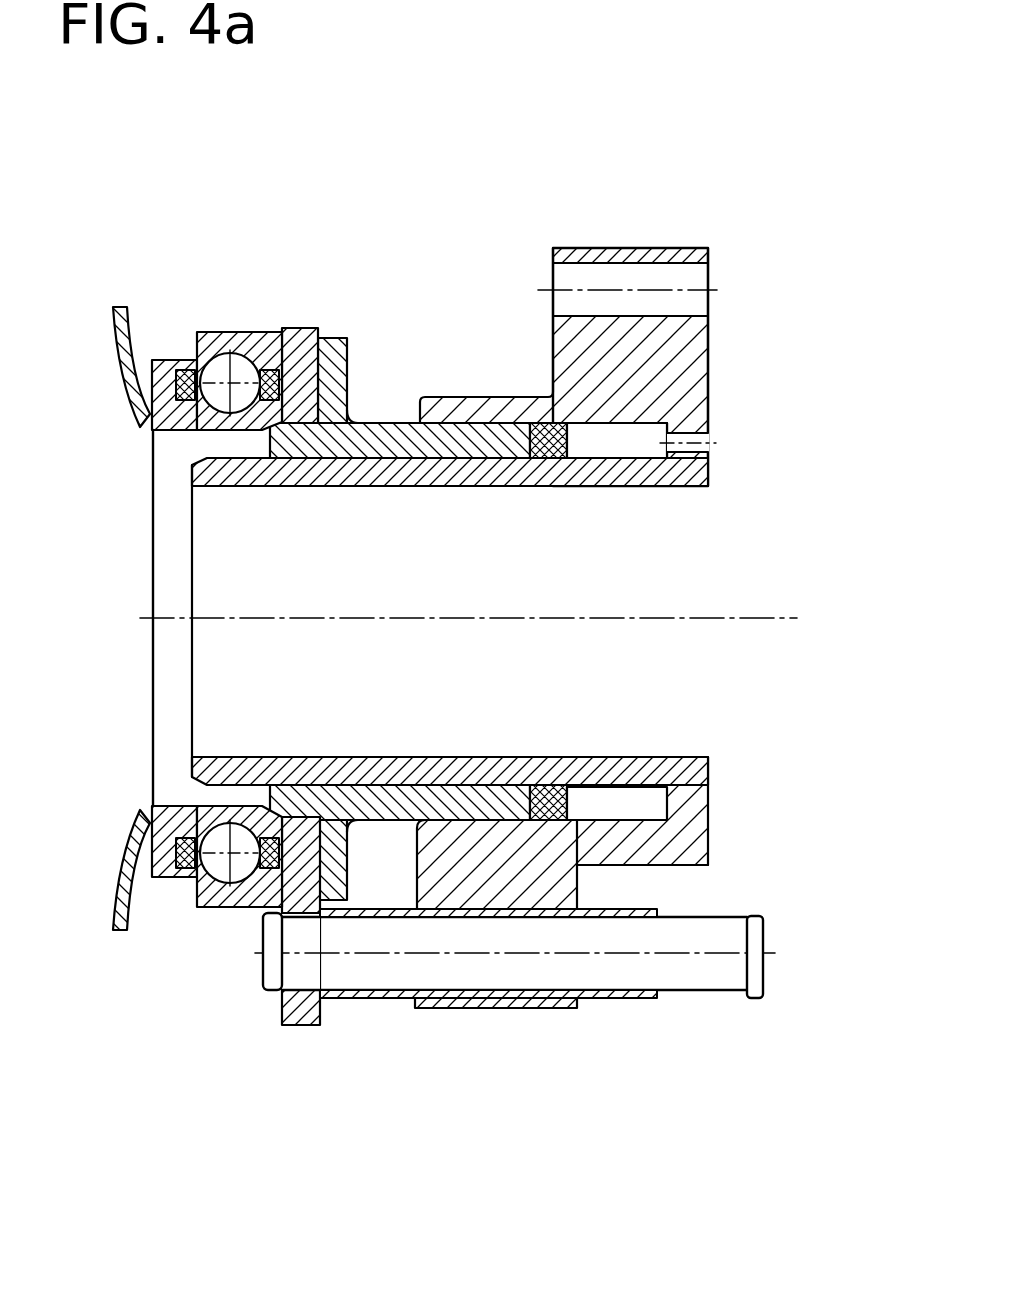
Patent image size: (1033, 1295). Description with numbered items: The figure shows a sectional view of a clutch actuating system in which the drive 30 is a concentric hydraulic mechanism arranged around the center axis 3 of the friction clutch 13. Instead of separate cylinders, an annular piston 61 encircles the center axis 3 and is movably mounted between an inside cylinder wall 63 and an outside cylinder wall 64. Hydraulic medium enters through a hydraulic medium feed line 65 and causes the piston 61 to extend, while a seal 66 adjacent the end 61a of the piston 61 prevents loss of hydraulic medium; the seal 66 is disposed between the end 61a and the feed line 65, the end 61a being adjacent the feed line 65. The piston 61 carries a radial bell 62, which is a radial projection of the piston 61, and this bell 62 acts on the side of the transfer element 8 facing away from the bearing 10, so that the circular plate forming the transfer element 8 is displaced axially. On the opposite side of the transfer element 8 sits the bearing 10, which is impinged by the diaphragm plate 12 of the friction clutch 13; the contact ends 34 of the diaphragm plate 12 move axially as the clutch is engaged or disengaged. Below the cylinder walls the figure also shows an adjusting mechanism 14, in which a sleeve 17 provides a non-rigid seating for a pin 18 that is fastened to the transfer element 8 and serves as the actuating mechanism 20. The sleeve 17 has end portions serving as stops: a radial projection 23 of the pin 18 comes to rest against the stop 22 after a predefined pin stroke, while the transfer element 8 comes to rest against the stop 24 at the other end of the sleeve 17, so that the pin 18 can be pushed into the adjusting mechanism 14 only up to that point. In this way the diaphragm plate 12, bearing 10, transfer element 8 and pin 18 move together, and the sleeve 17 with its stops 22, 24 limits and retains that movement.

The center axis 3 is at (141, 618).
The transfer element 8 is at (297, 353).
The bearing 10 is at (227, 337).
The diaphragm plate 12 is at (113, 325).
The friction clutch 13 is at (122, 305).
The adjusting mechanism 14 is at (390, 1033).
The sleeve 17 is at (592, 1003).
The pin 18 is at (452, 968).
The actuating mechanism 20 is at (720, 942).
The stop 22 is at (660, 997).
The radial projection 23 is at (757, 940).
The stop 24 is at (280, 990).
The drive 30 is at (337, 460).
The contact ends 34 is at (116, 387).
The piston 61 is at (390, 440).
The end of the piston 61a is at (508, 452).
The radial bell 62 is at (334, 366).
The inside cylinder wall 63 is at (433, 474).
The outside cylinder wall 64 is at (512, 410).
The hydraulic medium feed line 65 is at (712, 443).
The seal 66 is at (560, 452).